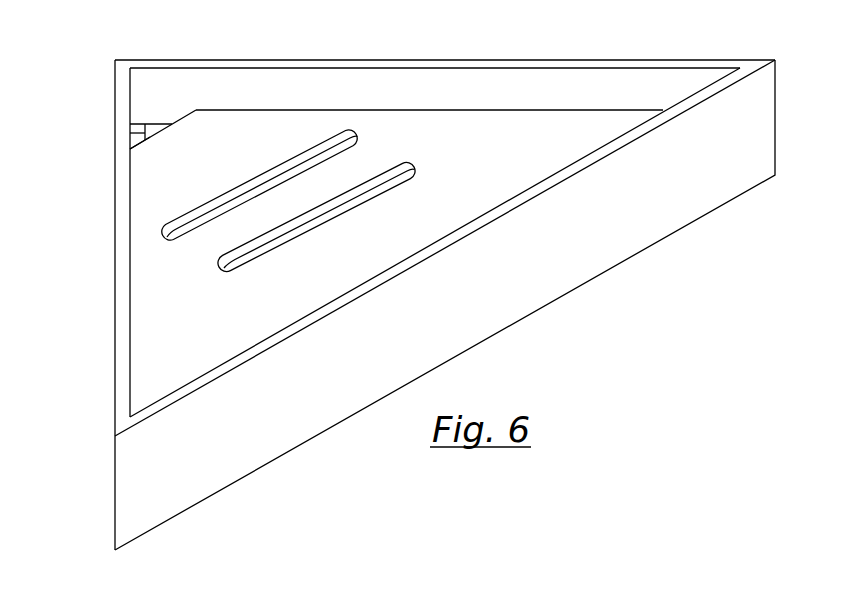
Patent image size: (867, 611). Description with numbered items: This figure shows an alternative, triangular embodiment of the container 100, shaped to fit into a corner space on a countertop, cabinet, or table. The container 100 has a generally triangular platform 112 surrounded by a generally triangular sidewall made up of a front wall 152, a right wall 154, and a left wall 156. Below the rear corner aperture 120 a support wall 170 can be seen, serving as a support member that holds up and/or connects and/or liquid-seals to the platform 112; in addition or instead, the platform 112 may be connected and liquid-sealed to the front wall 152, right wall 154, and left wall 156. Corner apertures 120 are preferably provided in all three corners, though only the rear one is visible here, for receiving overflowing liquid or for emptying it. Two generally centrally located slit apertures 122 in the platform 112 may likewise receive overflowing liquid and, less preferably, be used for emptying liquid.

The container 100 is at (603, 53).
The platform 112 is at (500, 169).
The corner aperture 120 is at (138, 137).
The slit aperture 122 is at (351, 206).
The front wall 152 is at (563, 265).
The right wall 154 is at (357, 85).
The left wall 156 is at (115, 243).
The support wall 170 is at (158, 125).